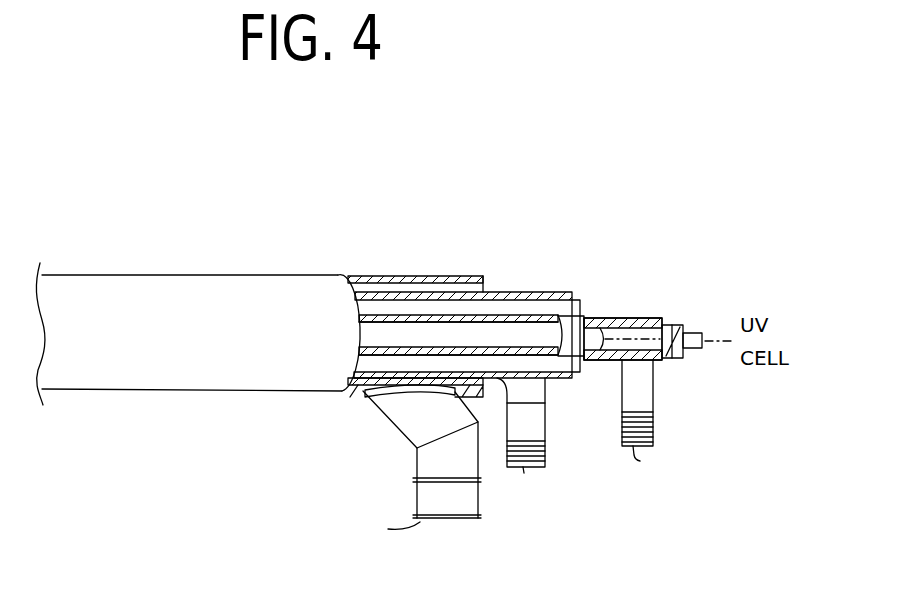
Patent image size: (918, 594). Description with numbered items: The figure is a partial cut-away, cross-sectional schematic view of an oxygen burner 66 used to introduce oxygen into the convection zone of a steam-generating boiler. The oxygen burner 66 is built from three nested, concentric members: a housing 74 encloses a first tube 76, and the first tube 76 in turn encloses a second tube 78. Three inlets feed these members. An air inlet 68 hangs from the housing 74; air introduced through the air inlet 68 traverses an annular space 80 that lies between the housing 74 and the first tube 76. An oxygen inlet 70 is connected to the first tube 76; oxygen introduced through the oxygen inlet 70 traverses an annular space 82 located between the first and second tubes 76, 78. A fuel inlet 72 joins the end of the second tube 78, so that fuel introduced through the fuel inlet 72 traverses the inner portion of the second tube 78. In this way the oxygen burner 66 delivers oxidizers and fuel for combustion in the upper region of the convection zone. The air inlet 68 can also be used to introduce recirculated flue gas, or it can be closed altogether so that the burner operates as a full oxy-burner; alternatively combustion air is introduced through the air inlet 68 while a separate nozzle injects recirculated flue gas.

The oxygen burner 66 is at (425, 210).
The air inlet 68 is at (392, 424).
The oxygen inlet 70 is at (543, 428).
The fuel inlet 72 is at (653, 394).
The housing 74 is at (178, 275).
The first tube 76 is at (495, 293).
The second tube 78 is at (400, 320).
The annular space 80 is at (348, 393).
The annular space 82 is at (368, 365).